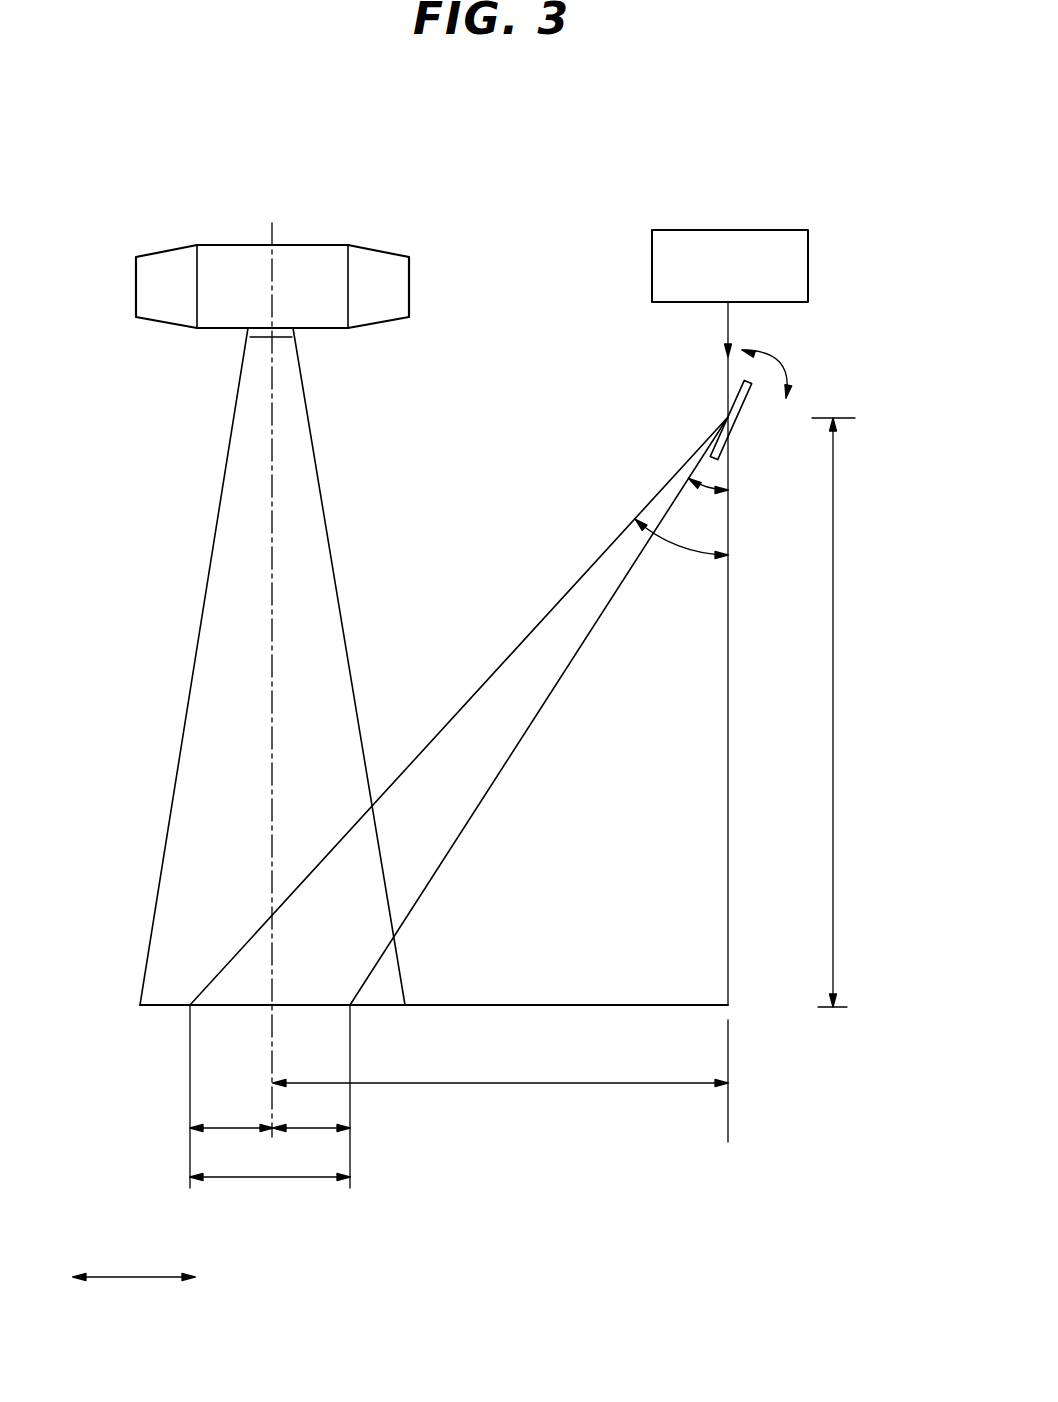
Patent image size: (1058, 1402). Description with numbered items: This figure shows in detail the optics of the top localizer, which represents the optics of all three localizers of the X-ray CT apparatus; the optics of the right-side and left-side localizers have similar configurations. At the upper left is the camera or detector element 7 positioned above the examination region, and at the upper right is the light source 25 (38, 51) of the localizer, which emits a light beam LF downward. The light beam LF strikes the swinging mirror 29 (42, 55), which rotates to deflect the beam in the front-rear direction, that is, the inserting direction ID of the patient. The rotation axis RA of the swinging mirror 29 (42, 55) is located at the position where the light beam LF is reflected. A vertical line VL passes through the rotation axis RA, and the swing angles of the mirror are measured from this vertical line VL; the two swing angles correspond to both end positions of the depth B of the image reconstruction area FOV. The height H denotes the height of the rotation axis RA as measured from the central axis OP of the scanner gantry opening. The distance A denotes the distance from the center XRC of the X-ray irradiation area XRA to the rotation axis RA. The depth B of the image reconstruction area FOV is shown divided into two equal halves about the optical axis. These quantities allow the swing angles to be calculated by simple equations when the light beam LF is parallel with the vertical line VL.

The camera 7 is at (302, 245).
The light source 25 is at (665, 213).
The light source 38 is at (665, 213).
The light source 51 is at (667, 232).
The swinging mirror 29 is at (641, 405).
The swinging mirror 42 is at (641, 405).
The swinging mirror 55 is at (748, 383).
The light beam LF is at (732, 315).
The rotation axis RA is at (724, 416).
The height of rotation axis H is at (838, 712).
The distance A is at (500, 1067).
The depth of image reconstruction area B is at (270, 1096).
The image reconstruction area FOV is at (297, 1013).
The central axis of scanner gantry opening OP is at (412, 1050).
The vertical line VL is at (729, 950).
The center of X-ray irradiation area XRC is at (273, 1005).
The X-ray irradiation area XRA is at (367, 995).
The inserting direction ID is at (134, 1318).